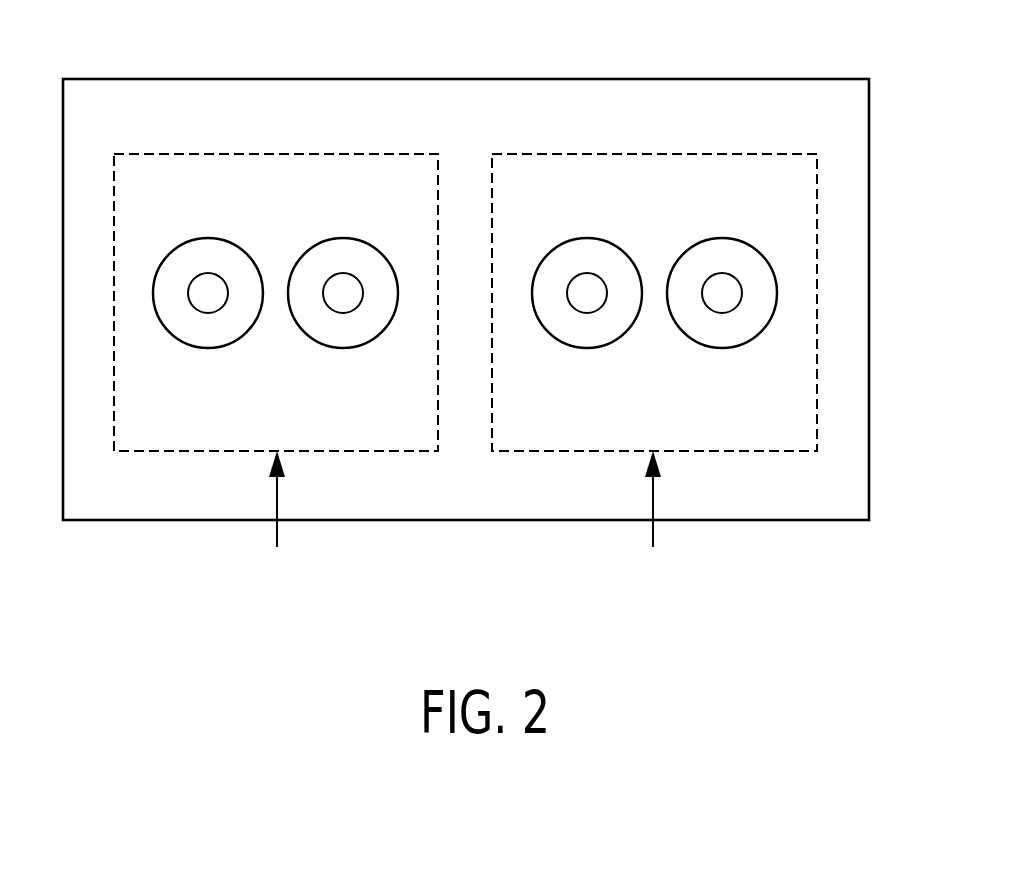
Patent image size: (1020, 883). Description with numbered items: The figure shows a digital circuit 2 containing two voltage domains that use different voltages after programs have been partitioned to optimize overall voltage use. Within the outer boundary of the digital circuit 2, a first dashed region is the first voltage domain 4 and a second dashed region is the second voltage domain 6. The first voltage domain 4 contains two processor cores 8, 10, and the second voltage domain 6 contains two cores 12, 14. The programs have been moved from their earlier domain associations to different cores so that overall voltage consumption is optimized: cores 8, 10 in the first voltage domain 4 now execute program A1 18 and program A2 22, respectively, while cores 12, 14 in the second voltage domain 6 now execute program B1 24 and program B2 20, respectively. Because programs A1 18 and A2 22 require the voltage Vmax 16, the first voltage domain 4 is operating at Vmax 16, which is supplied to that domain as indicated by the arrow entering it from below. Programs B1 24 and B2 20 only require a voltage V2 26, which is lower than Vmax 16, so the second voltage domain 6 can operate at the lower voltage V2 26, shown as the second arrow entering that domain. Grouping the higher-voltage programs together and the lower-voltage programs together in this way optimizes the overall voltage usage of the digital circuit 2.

The digital circuit 2 is at (650, 79).
The Voltage Domain 1 4 is at (177, 154).
The Voltage Domain 2 6 is at (552, 153).
The processor core 8 is at (209, 318).
The processor core 10 is at (344, 318).
The core 12 is at (587, 319).
The core 14 is at (722, 319).
The voltage Vmax 16 is at (243, 563).
The program A1 18 is at (225, 273).
The program B2 20 is at (738, 275).
The program A2 22 is at (360, 273).
The program B1 24 is at (602, 275).
The voltage V2 26 is at (633, 565).